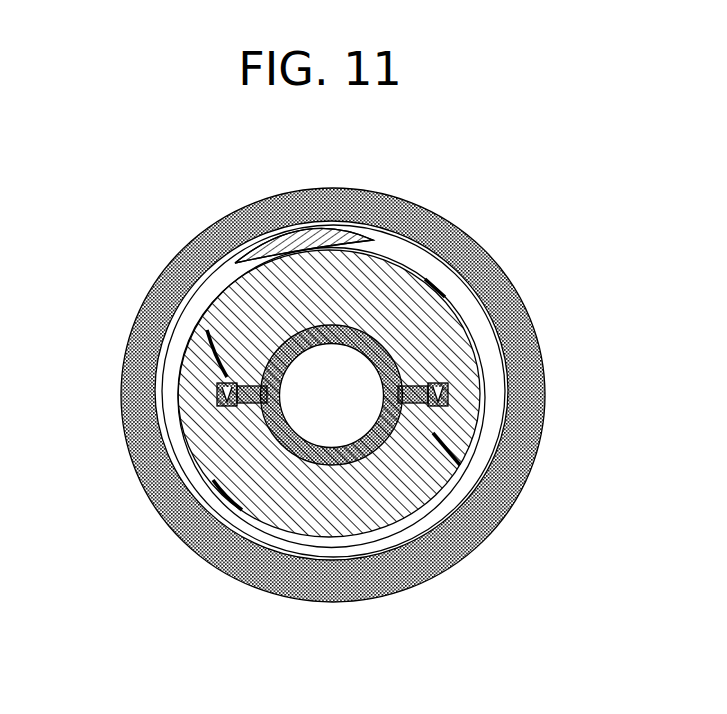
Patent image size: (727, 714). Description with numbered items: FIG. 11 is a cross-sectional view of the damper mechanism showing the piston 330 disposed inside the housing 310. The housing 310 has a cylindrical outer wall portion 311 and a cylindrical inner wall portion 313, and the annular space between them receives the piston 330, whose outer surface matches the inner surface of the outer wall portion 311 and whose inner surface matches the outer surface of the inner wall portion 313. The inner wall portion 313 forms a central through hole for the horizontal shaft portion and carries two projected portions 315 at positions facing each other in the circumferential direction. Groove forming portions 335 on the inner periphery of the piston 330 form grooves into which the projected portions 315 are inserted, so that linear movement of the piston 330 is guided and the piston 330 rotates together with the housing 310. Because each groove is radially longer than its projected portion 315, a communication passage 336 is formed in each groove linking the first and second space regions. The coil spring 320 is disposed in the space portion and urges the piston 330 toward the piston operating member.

The housing 310 is at (206, 223).
The outer wall portion 311 is at (302, 206).
The inner wall portion 313 is at (331, 463).
The projected portion 315 is at (247, 413).
The coil spring 320 is at (230, 522).
The piston 330 is at (412, 268).
The groove forming portion 335 is at (212, 392).
The communication passage 336 is at (205, 325).